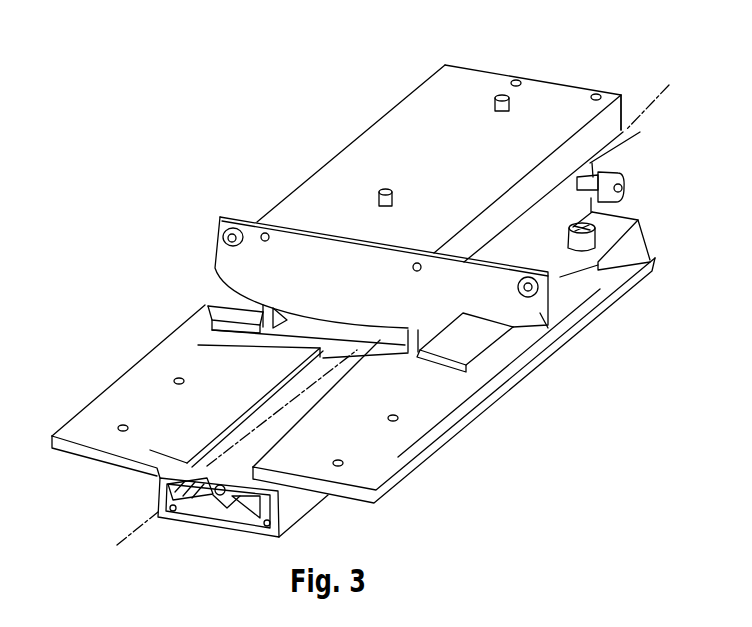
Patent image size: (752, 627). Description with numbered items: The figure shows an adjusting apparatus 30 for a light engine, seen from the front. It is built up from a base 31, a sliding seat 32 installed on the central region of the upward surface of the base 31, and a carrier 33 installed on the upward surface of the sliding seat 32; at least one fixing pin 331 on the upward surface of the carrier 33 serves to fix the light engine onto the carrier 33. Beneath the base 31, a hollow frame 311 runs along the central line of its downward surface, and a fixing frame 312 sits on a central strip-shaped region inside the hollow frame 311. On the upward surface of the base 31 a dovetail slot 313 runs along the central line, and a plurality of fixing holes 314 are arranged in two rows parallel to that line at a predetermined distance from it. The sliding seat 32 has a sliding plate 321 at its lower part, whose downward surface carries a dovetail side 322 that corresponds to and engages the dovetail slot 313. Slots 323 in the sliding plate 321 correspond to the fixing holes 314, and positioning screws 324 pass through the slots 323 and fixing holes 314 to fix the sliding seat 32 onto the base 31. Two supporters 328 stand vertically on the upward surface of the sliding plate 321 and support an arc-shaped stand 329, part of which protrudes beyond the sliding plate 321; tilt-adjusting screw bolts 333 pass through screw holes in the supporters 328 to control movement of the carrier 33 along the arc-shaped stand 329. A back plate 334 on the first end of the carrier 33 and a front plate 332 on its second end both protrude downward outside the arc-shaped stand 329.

The adjusting apparatus 30 is at (238, 124).
The base 31 is at (398, 456).
The hollow frame 311 is at (205, 523).
The fixing frame 312 is at (220, 497).
The dovetail slot 313 is at (157, 476).
The fixing holes 314 is at (118, 426).
The sliding seat 32 is at (563, 268).
The sliding plate 321 is at (464, 345).
The dovetail side 322 is at (312, 355).
The slots 323 is at (653, 270).
The positioning screws 324 is at (589, 210).
The supporters 328 is at (208, 306).
The arc-shaped stand 329 is at (626, 127).
The carrier 33 is at (279, 217).
The fixing pin 331 is at (496, 96).
The front plate 332 is at (546, 320).
The tilt-adjusting screw bolts 333 is at (616, 173).
The back plate 334 is at (621, 97).